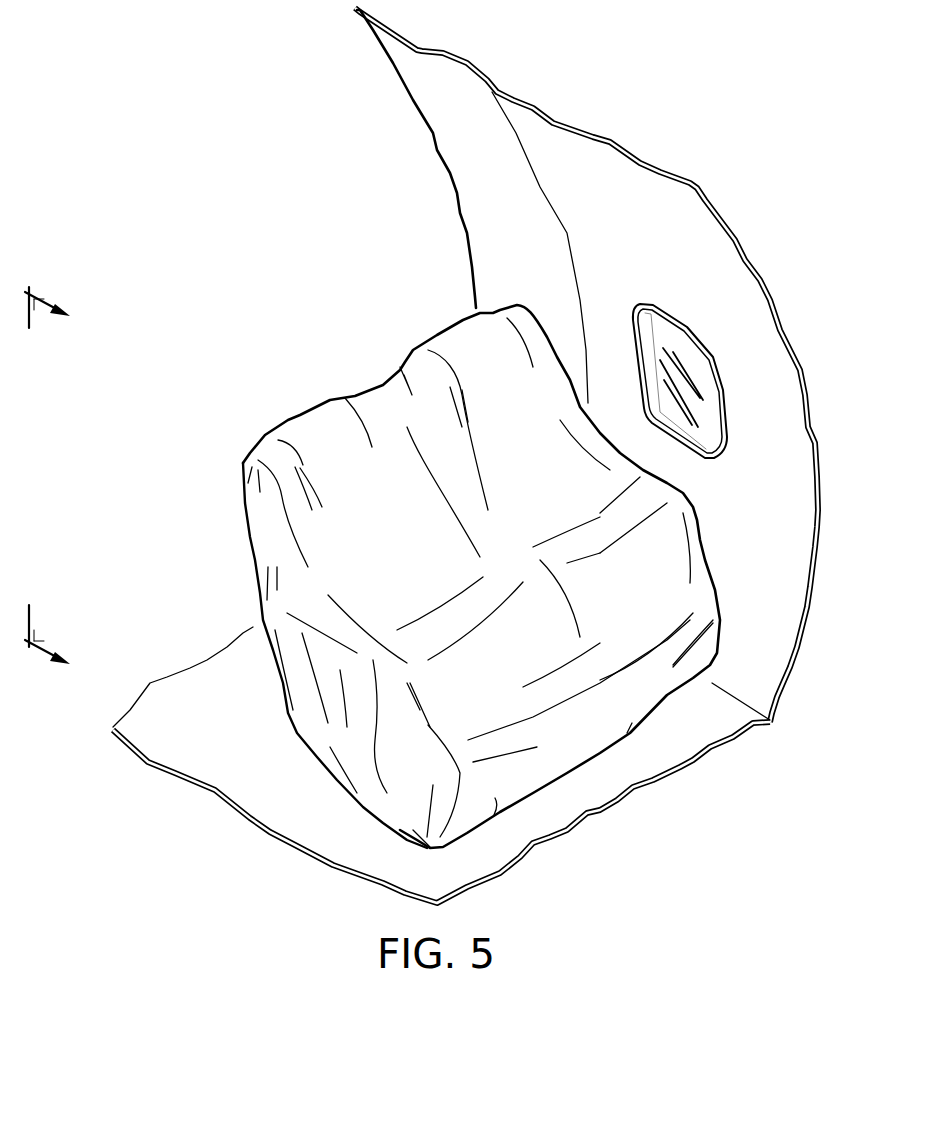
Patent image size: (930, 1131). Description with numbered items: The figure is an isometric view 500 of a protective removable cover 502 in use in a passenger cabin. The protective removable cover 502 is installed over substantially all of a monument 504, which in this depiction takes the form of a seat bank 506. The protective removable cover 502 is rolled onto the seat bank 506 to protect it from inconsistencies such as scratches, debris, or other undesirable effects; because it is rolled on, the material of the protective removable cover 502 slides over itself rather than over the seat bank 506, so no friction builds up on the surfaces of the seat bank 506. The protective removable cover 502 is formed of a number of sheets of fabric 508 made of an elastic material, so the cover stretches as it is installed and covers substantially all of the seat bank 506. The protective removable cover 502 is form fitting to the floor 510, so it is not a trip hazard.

The view 500 is at (204, 108).
The protective removable cover 502 is at (310, 420).
The monument 504 is at (705, 551).
The seat bank 506 is at (441, 756).
The number of sheets of fabric 508 is at (245, 515).
The floor 510 is at (205, 675).